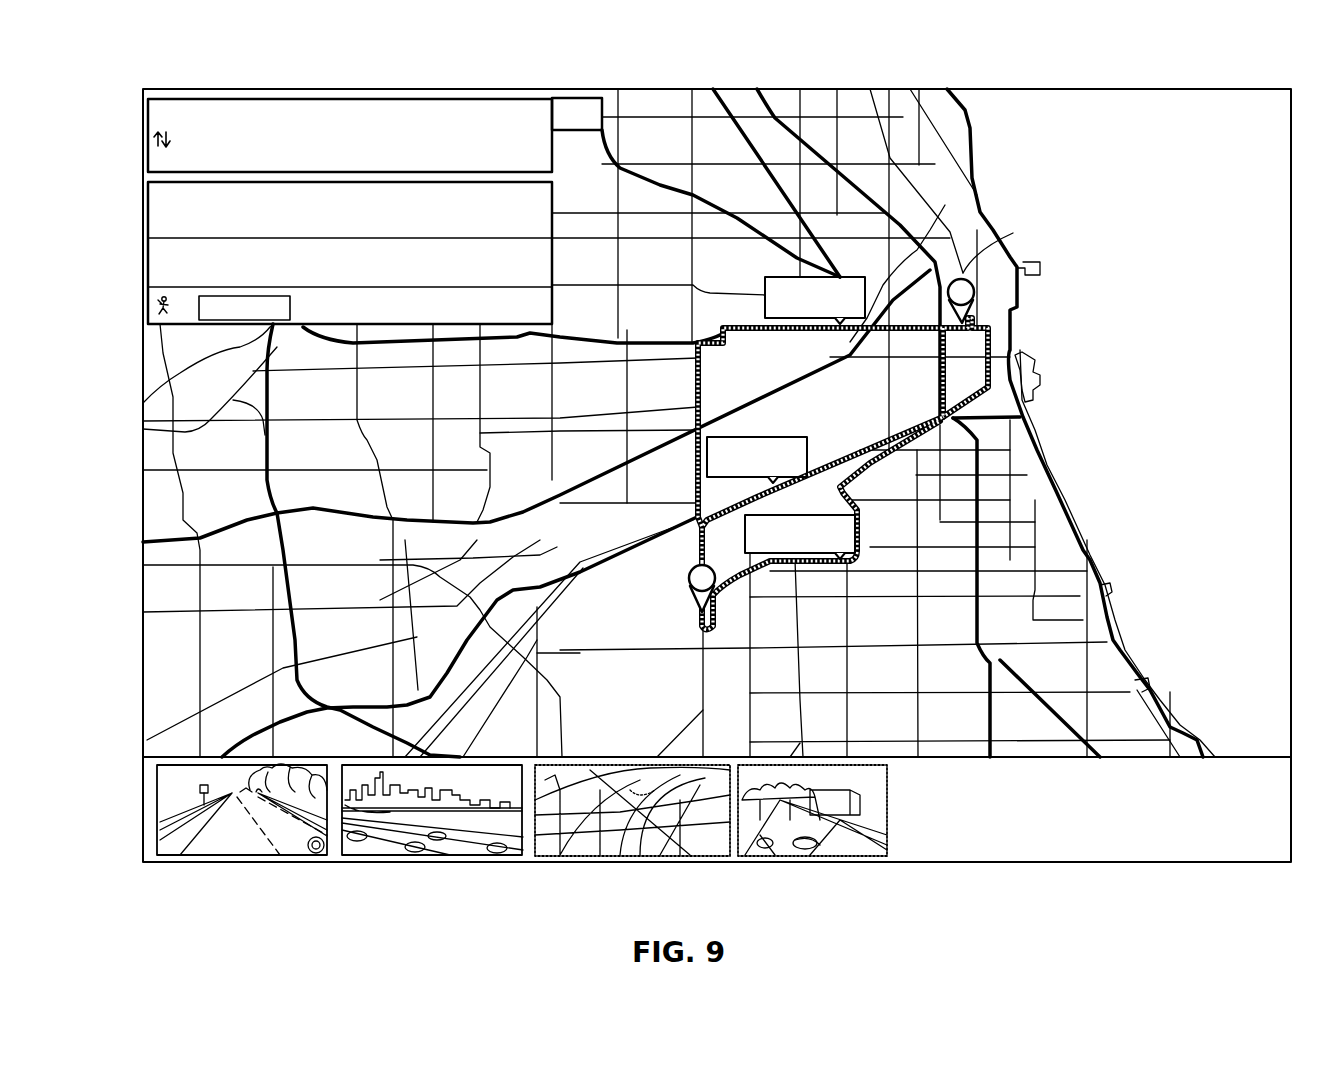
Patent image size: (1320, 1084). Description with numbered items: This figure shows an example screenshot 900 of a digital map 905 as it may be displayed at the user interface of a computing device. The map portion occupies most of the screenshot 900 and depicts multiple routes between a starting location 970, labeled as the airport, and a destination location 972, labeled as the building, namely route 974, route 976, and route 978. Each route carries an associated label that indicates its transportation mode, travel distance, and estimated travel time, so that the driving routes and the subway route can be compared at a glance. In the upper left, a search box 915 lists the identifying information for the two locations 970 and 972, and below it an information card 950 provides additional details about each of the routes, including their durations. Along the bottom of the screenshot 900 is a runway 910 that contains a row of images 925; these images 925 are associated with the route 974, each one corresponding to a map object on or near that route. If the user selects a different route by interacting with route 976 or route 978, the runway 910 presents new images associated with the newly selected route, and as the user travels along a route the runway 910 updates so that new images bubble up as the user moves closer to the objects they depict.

The screenshot 900 is at (851, 62).
The digital map 905 is at (1083, 89).
The runway 910 is at (137, 815).
The search box 915 is at (429, 99).
The images 925 is at (233, 856).
The information card 950 is at (532, 182).
The location 970 is at (692, 574).
The location 972 is at (970, 280).
The route 974 is at (864, 300).
The route 976 is at (790, 437).
The route 978 is at (810, 514).